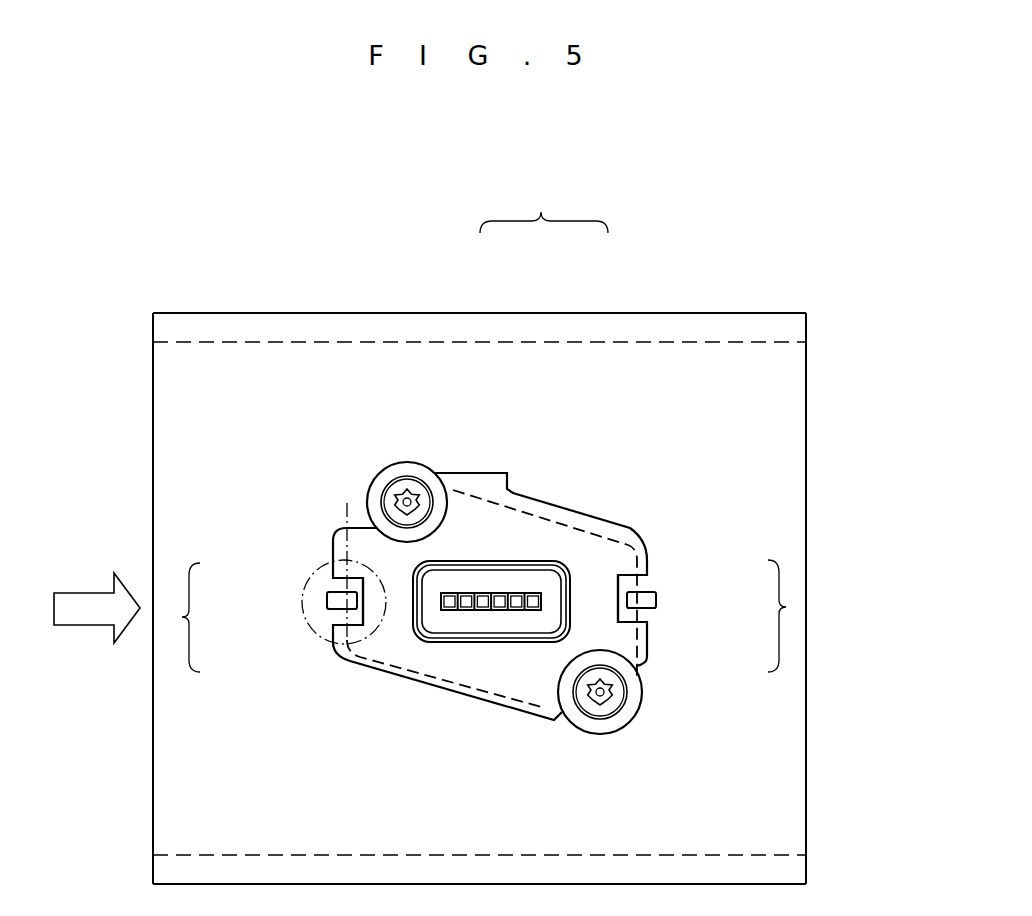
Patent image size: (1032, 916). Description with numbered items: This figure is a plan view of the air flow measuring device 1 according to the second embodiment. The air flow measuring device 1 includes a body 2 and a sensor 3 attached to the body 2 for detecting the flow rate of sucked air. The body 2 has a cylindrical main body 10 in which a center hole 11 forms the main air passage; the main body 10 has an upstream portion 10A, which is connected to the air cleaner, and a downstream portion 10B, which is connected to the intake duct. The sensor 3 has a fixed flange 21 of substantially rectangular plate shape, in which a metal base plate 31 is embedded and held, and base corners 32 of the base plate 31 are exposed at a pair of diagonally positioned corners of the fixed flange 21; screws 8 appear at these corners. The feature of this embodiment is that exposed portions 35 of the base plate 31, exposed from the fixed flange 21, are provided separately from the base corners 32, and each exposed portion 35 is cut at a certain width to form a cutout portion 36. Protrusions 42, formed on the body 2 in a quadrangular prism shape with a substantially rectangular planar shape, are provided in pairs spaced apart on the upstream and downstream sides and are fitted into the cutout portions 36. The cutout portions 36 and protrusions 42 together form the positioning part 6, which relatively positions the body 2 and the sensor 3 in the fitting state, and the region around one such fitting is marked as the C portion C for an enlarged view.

The air flow measuring device 1 is at (544, 205).
The body 2 is at (589, 313).
The sensor 3 is at (492, 556).
The main body 10 is at (478, 542).
The upstream portion 10A is at (153, 385).
The downstream portion 10B is at (806, 384).
The center hole 11 is at (767, 342).
The fixed flange 21 is at (561, 533).
The base plate 31 is at (363, 520).
The base corner 32 is at (382, 477).
The screw 8 is at (418, 493).
The exposed portion 35 is at (337, 582).
The cutout portion 36 is at (327, 600).
The protrusion 42 is at (340, 610).
The positioning part 6 is at (479, 616).
The C portion C is at (323, 641).